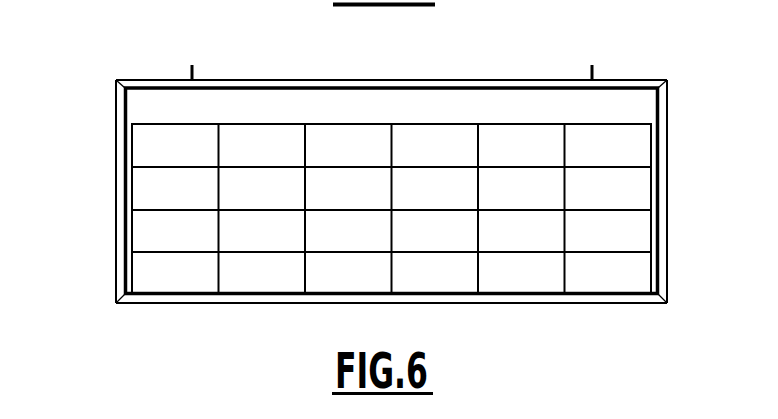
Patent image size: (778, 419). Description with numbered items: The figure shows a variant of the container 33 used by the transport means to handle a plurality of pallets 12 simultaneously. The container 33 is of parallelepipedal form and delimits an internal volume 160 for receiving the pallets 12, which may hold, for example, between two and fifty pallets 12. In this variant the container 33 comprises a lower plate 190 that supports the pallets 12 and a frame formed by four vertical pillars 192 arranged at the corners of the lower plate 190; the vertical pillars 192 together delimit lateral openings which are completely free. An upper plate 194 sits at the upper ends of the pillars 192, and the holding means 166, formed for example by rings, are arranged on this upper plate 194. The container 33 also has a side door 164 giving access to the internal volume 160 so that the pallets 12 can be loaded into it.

The pallet 12 is at (635, 143).
The container 33 is at (109, 214).
The internal volume 160 is at (445, 103).
The side door 164 is at (661, 216).
The holding means 166 is at (187, 72).
The lower plate 190 is at (191, 304).
The vertical pillars 192 is at (119, 153).
The upper plate 194 is at (279, 86).